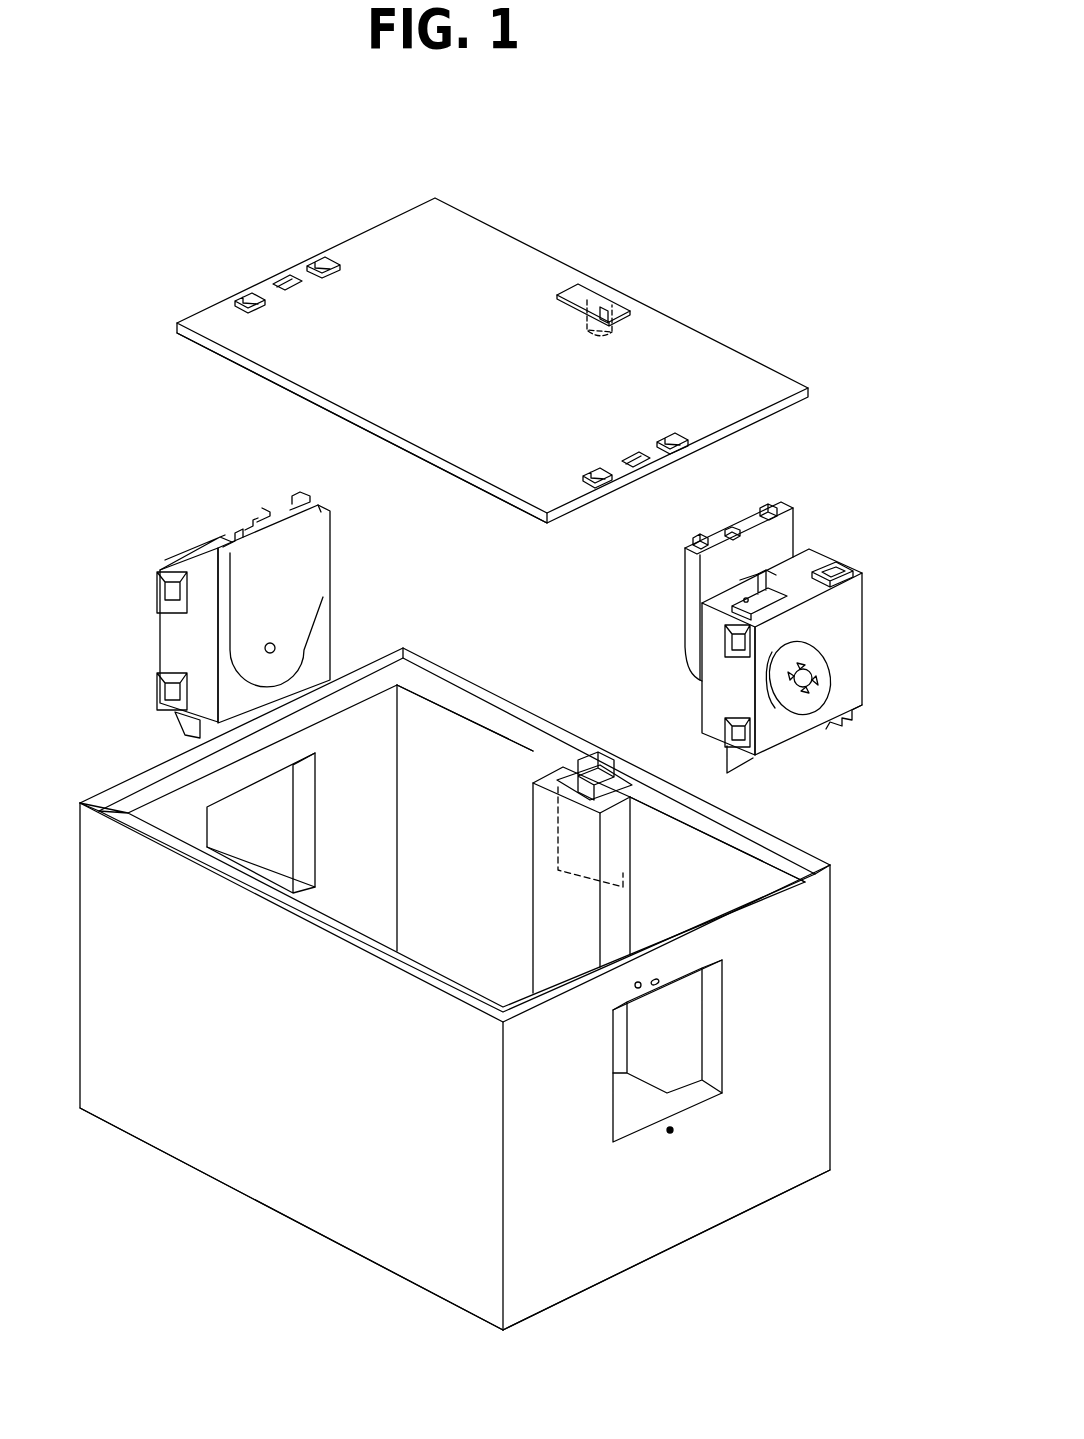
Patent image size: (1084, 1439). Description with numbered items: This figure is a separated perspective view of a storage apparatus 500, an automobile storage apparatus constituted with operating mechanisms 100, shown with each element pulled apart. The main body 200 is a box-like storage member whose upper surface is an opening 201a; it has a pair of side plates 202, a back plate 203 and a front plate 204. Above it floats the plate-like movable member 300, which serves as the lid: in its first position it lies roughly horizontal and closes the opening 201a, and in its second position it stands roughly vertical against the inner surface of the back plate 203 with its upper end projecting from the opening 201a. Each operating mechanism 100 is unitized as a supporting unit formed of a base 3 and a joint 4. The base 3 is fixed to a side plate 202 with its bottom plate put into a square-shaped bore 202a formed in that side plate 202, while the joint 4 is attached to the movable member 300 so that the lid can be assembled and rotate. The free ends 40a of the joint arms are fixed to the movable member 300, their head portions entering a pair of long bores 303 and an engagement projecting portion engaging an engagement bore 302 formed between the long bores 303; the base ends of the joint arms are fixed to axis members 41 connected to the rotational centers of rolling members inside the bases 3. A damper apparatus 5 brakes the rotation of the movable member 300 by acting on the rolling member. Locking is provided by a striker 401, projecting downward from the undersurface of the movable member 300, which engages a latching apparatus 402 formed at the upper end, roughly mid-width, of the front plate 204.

The base 3 is at (188, 633).
The joint 4 is at (529, 581).
The damper apparatus 5 is at (808, 682).
The free ends of joint arms 40a is at (288, 516).
The axis member 41 is at (278, 648).
The operating mechanism 100 is at (533, 603).
The main body 200 is at (188, 1100).
The opening 201a is at (173, 817).
The side plate 202 is at (378, 773).
The square-shaped bore 202a is at (238, 825).
The back plate 203 is at (322, 1192).
The front plate 204 is at (713, 880).
The movable member 300 is at (480, 253).
The engagement bore 302 is at (280, 277).
The long bore 303 is at (238, 297).
The striker 401 is at (632, 312).
The latching apparatus 402 is at (597, 755).
The storage apparatus 500 is at (654, 267).